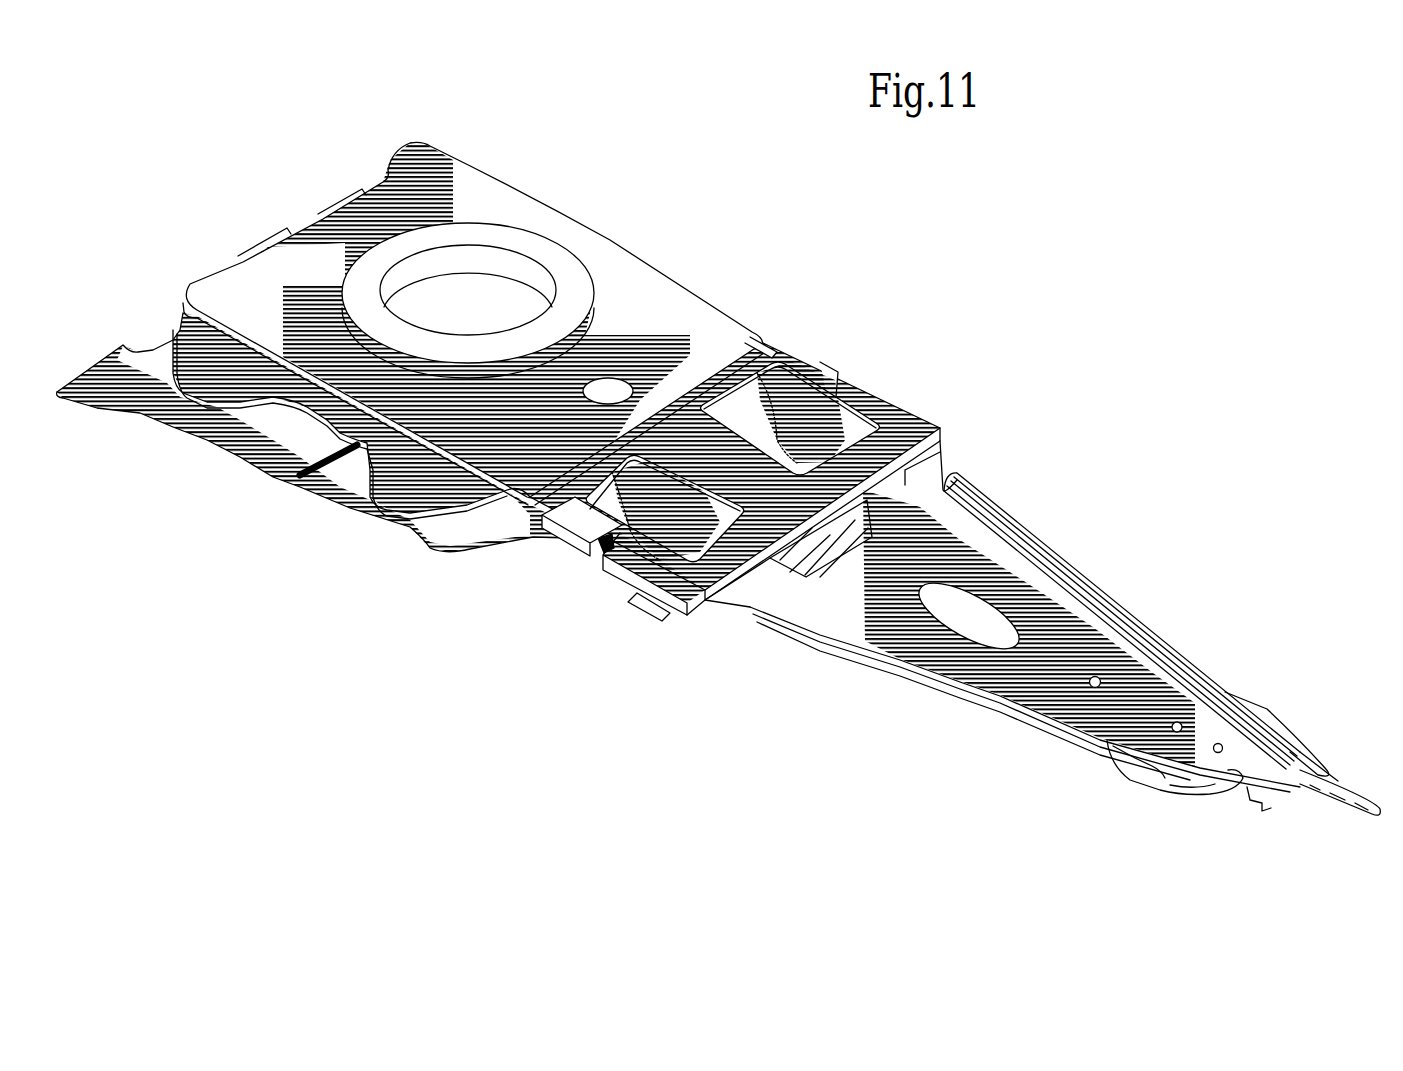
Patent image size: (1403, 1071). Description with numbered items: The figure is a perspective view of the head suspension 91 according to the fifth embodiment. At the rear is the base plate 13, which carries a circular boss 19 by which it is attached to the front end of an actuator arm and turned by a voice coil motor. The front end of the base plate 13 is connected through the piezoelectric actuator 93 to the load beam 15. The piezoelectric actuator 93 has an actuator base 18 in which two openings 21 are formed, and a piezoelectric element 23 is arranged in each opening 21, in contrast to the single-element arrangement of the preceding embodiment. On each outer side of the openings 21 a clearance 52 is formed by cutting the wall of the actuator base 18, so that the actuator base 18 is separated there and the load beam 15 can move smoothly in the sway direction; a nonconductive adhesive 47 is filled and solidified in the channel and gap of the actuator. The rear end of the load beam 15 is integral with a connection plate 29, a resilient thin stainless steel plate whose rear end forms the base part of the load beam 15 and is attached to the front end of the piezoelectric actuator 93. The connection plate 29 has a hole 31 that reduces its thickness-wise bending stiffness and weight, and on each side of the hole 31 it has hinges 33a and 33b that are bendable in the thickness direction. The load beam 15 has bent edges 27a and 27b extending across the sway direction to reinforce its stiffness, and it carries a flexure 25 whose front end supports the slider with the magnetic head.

The head suspension 91 is at (1161, 169).
The piezoelectric actuator 93 is at (999, 286).
The base plate 13 is at (630, 286).
The circular boss 19 is at (483, 257).
The actuator base 18 is at (675, 440).
The opening 21 is at (783, 400).
The piezoelectric element 23 is at (837, 380).
The clearance 52 is at (836, 373).
The nonconductive adhesive 47 is at (866, 412).
The connection plate 29 is at (943, 458).
The hinge 33a is at (920, 482).
The hinge 33b is at (742, 585).
The hole 31 is at (748, 583).
The load beam 15 is at (1070, 627).
The bent edge 27a is at (1034, 541).
The bent edge 27b is at (937, 680).
The flexure 25 is at (1163, 777).